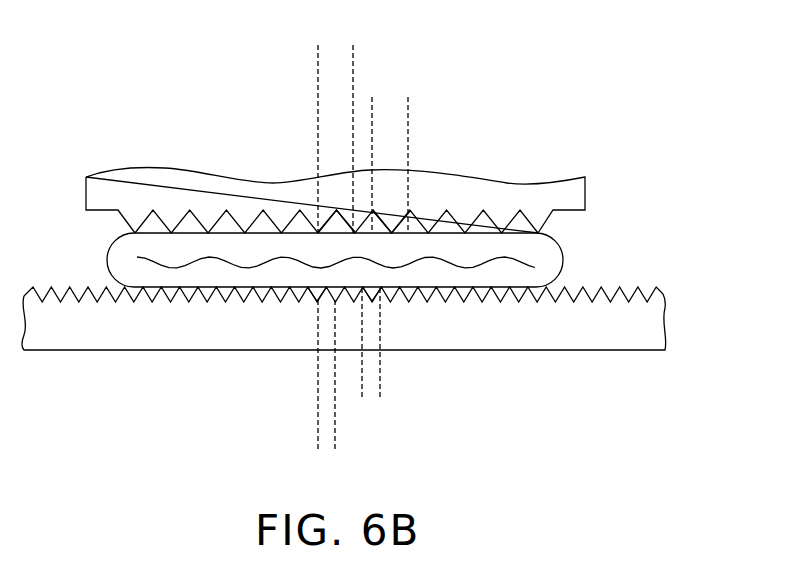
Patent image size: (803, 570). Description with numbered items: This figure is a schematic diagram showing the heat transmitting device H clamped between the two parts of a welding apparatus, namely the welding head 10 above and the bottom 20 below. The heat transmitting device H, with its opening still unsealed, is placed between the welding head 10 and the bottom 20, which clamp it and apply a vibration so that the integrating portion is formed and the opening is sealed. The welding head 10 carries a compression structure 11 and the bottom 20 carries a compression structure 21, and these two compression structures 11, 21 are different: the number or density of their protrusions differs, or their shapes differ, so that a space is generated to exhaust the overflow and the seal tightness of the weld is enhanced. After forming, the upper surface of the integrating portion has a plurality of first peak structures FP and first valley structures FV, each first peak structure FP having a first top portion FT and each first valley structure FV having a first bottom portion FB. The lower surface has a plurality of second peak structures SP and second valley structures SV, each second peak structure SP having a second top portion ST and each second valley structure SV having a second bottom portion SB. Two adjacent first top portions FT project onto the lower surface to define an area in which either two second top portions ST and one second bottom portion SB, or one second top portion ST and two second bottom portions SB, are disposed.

The welding head 10 is at (540, 193).
The compression structure 11 is at (541, 221).
The bottom 20 is at (592, 340).
The compression structure 21 is at (644, 290).
The heat transmitting device H is at (569, 260).
The first peak structure FP is at (393, 53).
The first valley structure FV is at (448, 104).
The first top portion FT is at (333, 232).
The first bottom portion FB is at (391, 232).
The second peak structure SP is at (368, 440).
The second valley structure SV is at (420, 385).
The second top portion ST is at (317, 301).
The second bottom portion SB is at (372, 301).